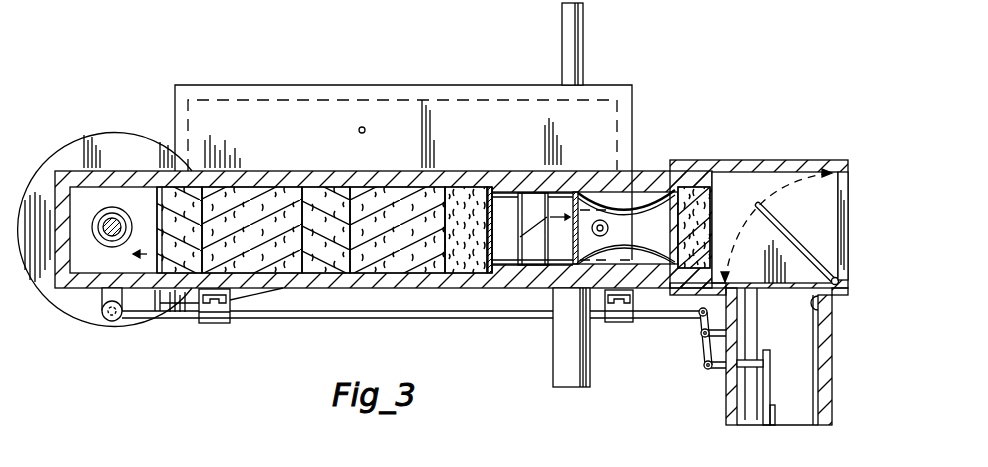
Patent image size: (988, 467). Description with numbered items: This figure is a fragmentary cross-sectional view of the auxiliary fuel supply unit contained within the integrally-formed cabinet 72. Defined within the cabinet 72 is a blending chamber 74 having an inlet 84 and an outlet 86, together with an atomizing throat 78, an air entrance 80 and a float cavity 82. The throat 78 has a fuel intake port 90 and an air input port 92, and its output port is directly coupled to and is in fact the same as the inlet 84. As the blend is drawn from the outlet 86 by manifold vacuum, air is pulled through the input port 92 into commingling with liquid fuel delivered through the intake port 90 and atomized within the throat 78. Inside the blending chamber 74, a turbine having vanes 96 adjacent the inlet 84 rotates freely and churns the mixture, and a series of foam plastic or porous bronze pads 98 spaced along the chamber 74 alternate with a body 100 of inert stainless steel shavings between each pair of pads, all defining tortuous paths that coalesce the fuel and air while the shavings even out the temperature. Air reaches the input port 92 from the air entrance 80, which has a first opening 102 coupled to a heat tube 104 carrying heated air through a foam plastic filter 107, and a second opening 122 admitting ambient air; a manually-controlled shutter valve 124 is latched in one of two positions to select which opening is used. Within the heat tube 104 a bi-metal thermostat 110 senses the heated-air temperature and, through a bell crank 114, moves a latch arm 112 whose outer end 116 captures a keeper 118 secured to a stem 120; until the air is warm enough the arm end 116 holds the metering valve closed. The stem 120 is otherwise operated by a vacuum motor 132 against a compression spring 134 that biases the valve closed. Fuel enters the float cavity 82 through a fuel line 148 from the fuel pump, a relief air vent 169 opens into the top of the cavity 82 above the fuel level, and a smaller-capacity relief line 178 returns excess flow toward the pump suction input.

The cabinet 72 is at (506, 289).
The blending chamber 74 is at (373, 182).
The atomizing throat 78 is at (637, 208).
The air entrance 80 is at (782, 168).
The float cavity 82 is at (335, 100).
The inlet 84 is at (594, 220).
The outlet 86 is at (134, 260).
The fuel intake port 90 is at (624, 208).
The air input port 92 is at (692, 186).
The vanes 96 is at (530, 205).
The pads 98 is at (180, 190).
The body of shavings 100 is at (248, 187).
The first opening 102 is at (820, 303).
The heat tube 104 is at (833, 387).
The foam plastic filter 107 is at (714, 183).
The thermostat 110 is at (772, 383).
The latch arm 112 is at (328, 320).
The bell crank 114 is at (698, 359).
The outer end 116 is at (134, 320).
The keeper 118 is at (103, 310).
The stem 120 is at (124, 209).
The second opening 122 is at (847, 197).
The shutter valve 124 is at (775, 216).
The vacuum motor 132 is at (92, 136).
The compression spring 134 is at (100, 238).
The fuel line 148 is at (590, 378).
The relief air vent 169 is at (365, 129).
The line 178 is at (584, 42).